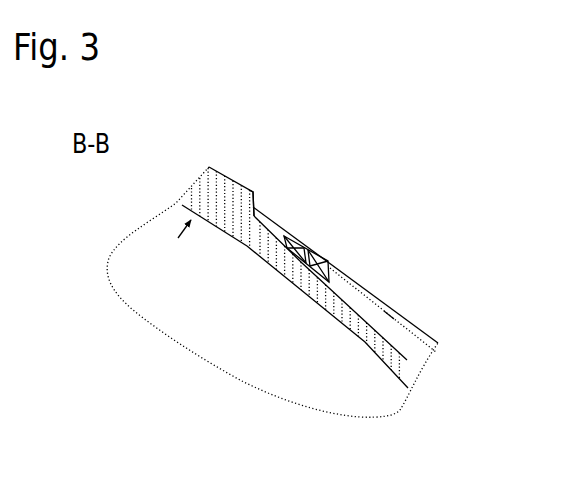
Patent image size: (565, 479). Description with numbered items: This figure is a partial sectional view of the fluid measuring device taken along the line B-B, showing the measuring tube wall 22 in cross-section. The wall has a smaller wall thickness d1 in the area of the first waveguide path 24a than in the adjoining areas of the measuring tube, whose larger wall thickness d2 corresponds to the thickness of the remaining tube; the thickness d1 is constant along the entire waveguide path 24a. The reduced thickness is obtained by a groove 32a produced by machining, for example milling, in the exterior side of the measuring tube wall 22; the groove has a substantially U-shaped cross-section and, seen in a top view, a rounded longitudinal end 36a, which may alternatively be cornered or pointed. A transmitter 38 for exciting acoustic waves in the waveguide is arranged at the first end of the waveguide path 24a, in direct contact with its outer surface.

The measuring tube wall 22 is at (234, 182).
The rounded longitudinal end 36a is at (257, 198).
The transmitter 38 is at (297, 237).
The first waveguide path 24a is at (357, 334).
The groove 32a is at (406, 346).
The wall thickness d1 is at (396, 317).
The wall thickness d2 is at (248, 122).